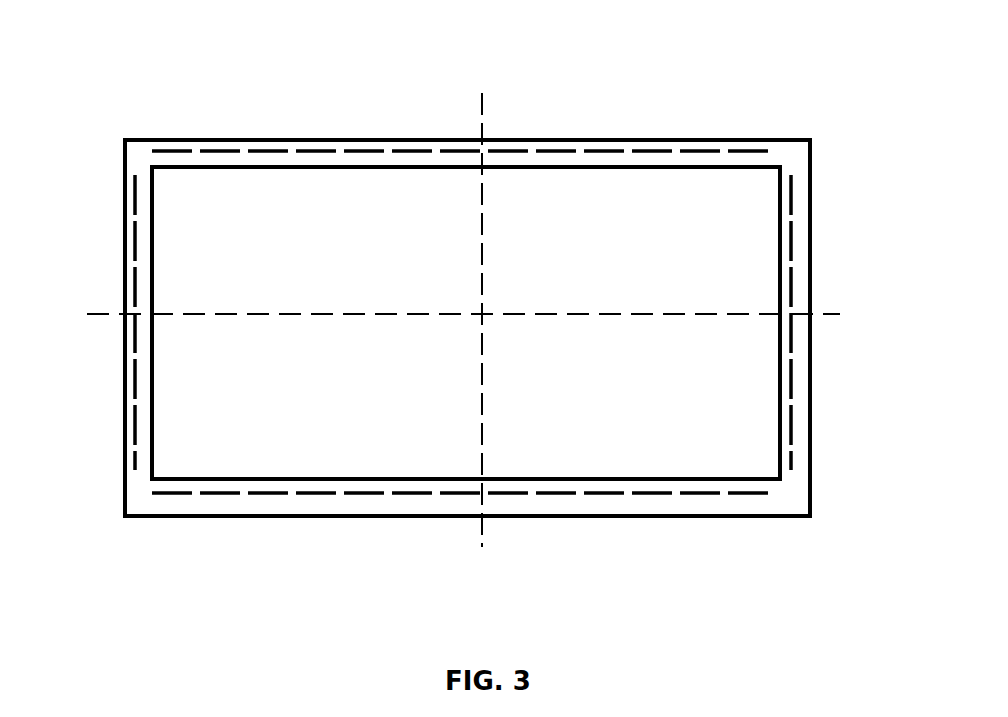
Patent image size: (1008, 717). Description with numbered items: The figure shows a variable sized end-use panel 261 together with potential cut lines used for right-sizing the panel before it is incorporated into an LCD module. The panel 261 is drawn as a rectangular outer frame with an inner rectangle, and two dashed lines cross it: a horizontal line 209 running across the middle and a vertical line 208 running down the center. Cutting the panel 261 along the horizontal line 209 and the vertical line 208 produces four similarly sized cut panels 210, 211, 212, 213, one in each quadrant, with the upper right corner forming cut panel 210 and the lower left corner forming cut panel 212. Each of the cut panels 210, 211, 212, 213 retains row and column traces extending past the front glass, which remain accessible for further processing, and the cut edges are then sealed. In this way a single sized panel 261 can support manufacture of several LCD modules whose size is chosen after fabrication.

The vertical line 208 is at (478, 128).
The horizontal line 209 is at (355, 312).
The variable sized end-use panel 261 is at (693, 137).
The cut panel 210 is at (811, 228).
The cut panel 211 is at (811, 392).
The cut panel 212 is at (122, 392).
The cut panel 213 is at (122, 183).